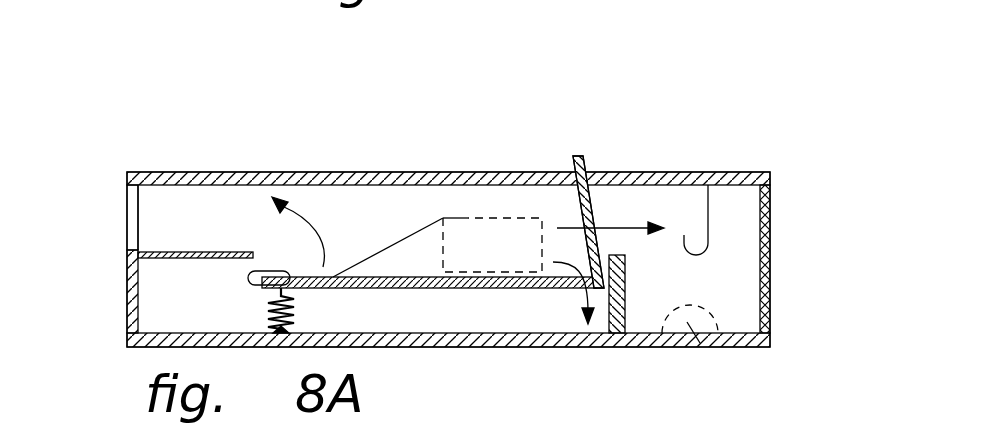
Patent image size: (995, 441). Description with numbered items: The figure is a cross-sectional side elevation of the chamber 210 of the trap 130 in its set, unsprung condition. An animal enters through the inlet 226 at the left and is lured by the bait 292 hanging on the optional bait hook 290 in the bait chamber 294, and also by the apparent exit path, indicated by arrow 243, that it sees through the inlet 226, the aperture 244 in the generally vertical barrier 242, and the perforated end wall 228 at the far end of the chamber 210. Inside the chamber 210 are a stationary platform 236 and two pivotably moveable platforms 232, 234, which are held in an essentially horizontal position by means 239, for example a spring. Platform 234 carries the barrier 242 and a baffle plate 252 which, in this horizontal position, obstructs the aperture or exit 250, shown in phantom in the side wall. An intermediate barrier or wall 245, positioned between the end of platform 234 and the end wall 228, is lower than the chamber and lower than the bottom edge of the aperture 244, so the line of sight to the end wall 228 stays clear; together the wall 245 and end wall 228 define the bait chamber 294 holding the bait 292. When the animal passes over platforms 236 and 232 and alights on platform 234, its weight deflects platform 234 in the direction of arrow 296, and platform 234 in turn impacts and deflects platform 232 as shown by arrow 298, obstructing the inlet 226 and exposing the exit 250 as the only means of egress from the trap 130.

The ink cartridge assembly 130 is at (720, 98).
The chamber 210 is at (745, 172).
The inlet 226 is at (127, 217).
The end wall 228 is at (770, 232).
The pivotably moveable platform 232 is at (297, 271).
The pivotably moveable platform 234 is at (410, 289).
The stationary platform 236 is at (190, 248).
The means for holding and returning platforms 239 is at (268, 306).
The generally vertical barrier 242 is at (585, 157).
The arrow 243 is at (630, 217).
The aperture 244 is at (577, 242).
The intermediate barrier or wall 245 is at (635, 335).
The aperture or exit 250 is at (480, 233).
The baffle plate 252 is at (402, 240).
The bait hook 290 is at (677, 255).
The bait 292 is at (700, 343).
The bait chamber 294 is at (685, 195).
The arrow 296 is at (583, 336).
The arrow 298 is at (318, 220).